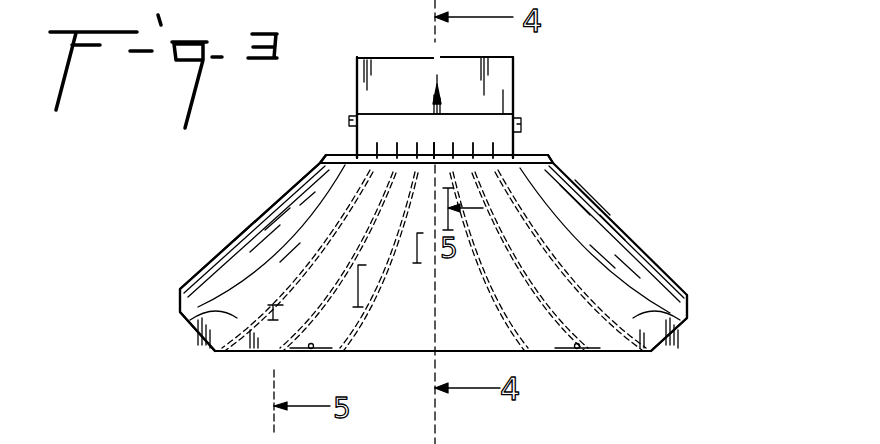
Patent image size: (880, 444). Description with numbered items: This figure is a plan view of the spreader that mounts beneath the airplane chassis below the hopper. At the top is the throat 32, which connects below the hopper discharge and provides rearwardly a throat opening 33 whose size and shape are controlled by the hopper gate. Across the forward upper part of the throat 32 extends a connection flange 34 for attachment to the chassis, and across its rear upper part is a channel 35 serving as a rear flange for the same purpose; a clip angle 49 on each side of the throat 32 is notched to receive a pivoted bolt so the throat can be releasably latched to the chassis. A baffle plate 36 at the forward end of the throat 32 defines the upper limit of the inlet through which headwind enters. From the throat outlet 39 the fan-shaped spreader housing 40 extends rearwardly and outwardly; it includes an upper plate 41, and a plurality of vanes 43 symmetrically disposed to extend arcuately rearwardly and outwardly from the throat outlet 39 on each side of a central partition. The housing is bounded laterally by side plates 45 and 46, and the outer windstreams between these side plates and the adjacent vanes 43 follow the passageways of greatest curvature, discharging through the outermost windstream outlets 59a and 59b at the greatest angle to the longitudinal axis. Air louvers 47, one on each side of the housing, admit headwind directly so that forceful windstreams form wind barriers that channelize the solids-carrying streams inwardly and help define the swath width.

The throat 32 is at (352, 73).
The throat opening 33 is at (420, 132).
The connection flange 34 is at (503, 57).
The channel 35 is at (330, 155).
The baffle plate 36 is at (495, 85).
The throat outlet 39 is at (456, 122).
The spreader housing 40 is at (423, 340).
The upper plate 41 is at (422, 299).
The vanes 43 is at (303, 277).
The side plate 45 is at (197, 306).
The side plate 46 is at (677, 313).
The air louver 47 is at (243, 229).
The clip angle 49 is at (350, 113).
The outermost windstream outlet 59a is at (213, 343).
The outermost windstream outlet 59b is at (670, 327).